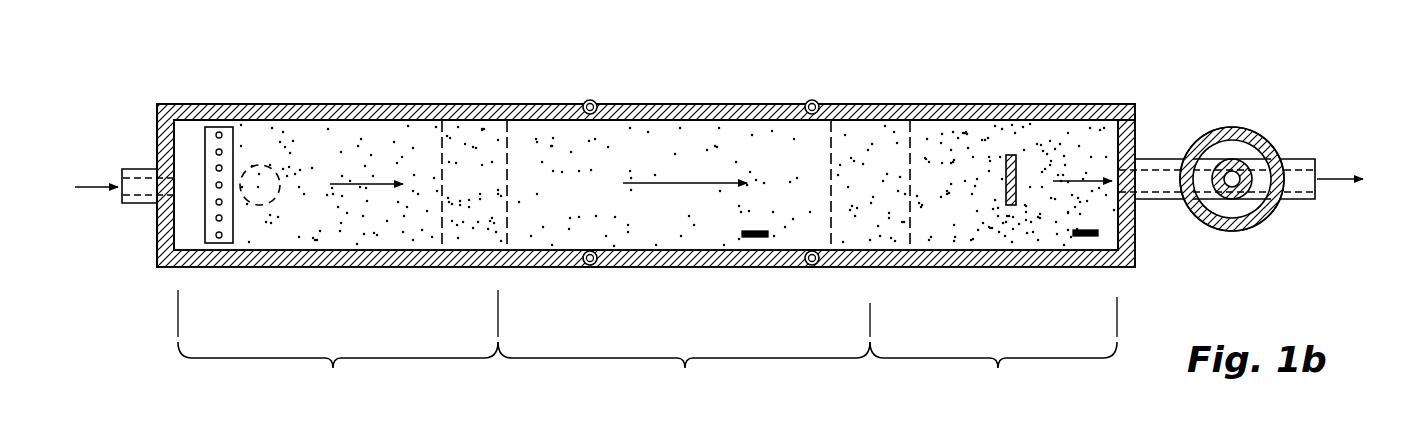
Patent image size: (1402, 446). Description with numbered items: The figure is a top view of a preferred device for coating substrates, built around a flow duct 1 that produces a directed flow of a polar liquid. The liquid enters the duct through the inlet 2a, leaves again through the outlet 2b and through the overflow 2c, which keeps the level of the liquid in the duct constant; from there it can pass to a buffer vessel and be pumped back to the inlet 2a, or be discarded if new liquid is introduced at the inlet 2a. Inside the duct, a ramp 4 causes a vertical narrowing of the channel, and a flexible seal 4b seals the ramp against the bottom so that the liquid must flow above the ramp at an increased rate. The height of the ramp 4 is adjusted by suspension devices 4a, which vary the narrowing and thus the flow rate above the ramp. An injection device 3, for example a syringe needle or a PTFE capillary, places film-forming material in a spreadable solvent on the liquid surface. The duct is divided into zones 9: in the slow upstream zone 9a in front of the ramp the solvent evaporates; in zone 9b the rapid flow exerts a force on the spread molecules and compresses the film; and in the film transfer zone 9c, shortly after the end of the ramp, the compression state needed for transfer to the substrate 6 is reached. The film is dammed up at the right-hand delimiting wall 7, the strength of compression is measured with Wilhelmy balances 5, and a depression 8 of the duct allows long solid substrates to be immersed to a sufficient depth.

The flow duct 1 is at (288, 104).
The inlet 2a is at (140, 187).
The outlet 2b is at (1150, 182).
The overflow 2c is at (1243, 165).
The injection device 3 is at (208, 142).
The ramp 4 is at (440, 219).
The suspension devices 4a is at (590, 100).
The flexible seal 4b is at (477, 232).
The Wilhelmy balances 5 is at (760, 238).
The substrate 6 is at (1013, 163).
The right-hand delimiting wall 7 is at (1125, 138).
The depression 8 is at (915, 228).
The zones 9 is at (383, 145).
The zone in front of the ramp 9a is at (338, 344).
The compression zone 9b is at (684, 263).
The film transfer zone 9c is at (977, 261).